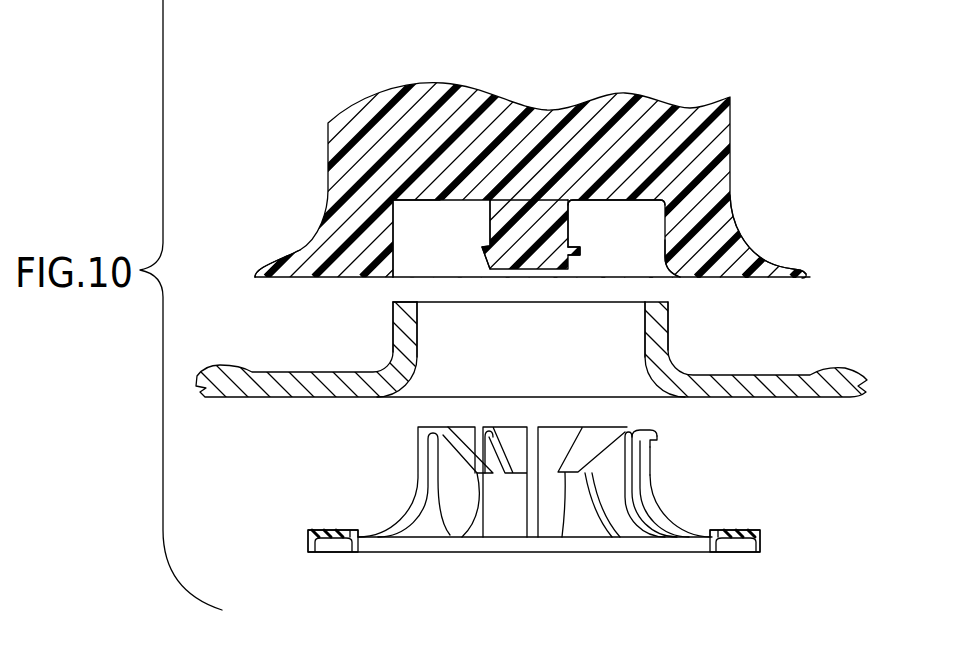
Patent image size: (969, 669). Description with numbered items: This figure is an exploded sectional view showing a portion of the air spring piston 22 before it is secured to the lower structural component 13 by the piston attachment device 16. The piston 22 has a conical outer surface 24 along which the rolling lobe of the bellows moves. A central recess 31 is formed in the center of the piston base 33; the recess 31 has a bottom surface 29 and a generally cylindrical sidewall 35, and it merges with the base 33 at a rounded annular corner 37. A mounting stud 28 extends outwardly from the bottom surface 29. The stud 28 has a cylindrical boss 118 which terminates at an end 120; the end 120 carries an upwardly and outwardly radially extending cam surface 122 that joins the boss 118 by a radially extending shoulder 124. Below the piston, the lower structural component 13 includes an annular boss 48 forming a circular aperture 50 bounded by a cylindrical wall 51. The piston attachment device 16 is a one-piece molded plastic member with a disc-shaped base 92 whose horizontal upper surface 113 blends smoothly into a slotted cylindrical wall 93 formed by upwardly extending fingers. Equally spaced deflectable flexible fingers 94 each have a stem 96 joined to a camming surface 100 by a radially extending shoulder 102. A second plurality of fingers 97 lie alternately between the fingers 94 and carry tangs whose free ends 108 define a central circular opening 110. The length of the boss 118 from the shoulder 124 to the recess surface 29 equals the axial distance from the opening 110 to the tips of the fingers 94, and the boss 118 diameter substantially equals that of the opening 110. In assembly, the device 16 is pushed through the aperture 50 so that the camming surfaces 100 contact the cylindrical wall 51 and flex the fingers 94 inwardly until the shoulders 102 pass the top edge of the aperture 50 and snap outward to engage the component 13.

The lower structural component 13 is at (797, 365).
The piston attachment device 16 is at (366, 559).
The piston 22 is at (328, 133).
The conical outer surface 24 is at (732, 160).
The mounting stud 28 is at (572, 228).
The bottom surface 29 is at (441, 238).
The central recess 31 is at (394, 214).
The base 33 is at (307, 278).
The cylindrical sidewall 35 is at (662, 230).
The rounded annular corner 37 is at (680, 277).
The annular boss 48 is at (673, 352).
The circular aperture 50 is at (421, 306).
The cylindrical wall 51 is at (400, 338).
The base 92 is at (678, 528).
The slotted cylindrical wall 93 is at (652, 478).
The deflectable flexible fingers 94 is at (442, 522).
The stem 96 is at (423, 485).
The second plurality of fingers 97 is at (618, 518).
The camming surface 100 is at (657, 430).
The radially extending shoulder 102 is at (658, 439).
The free ends 108 is at (563, 538).
The opening 110 is at (502, 482).
The upper surface 113 is at (335, 528).
The cylindrical boss 118 is at (500, 216).
The end 120 is at (511, 259).
The cam surface 122 is at (583, 257).
The radially extending shoulder 124 is at (490, 250).